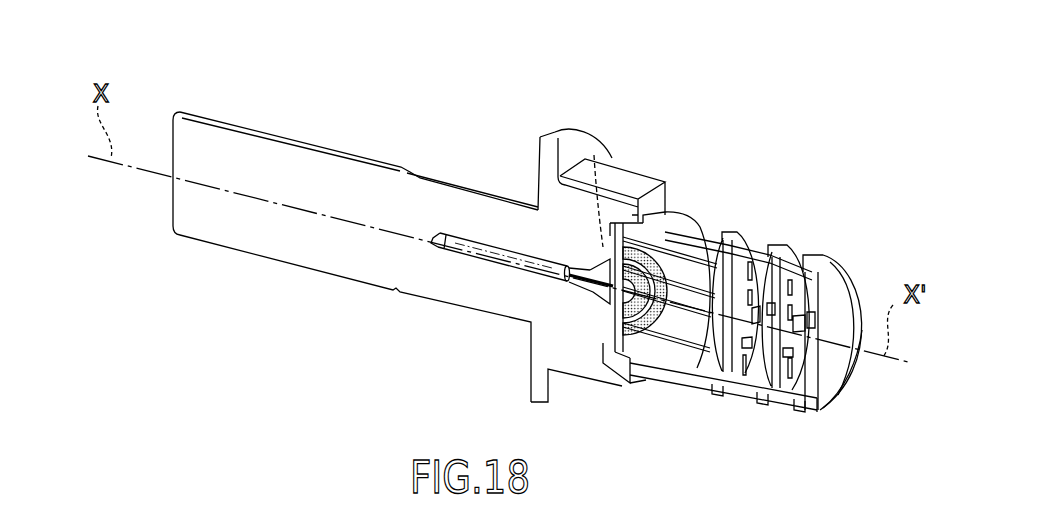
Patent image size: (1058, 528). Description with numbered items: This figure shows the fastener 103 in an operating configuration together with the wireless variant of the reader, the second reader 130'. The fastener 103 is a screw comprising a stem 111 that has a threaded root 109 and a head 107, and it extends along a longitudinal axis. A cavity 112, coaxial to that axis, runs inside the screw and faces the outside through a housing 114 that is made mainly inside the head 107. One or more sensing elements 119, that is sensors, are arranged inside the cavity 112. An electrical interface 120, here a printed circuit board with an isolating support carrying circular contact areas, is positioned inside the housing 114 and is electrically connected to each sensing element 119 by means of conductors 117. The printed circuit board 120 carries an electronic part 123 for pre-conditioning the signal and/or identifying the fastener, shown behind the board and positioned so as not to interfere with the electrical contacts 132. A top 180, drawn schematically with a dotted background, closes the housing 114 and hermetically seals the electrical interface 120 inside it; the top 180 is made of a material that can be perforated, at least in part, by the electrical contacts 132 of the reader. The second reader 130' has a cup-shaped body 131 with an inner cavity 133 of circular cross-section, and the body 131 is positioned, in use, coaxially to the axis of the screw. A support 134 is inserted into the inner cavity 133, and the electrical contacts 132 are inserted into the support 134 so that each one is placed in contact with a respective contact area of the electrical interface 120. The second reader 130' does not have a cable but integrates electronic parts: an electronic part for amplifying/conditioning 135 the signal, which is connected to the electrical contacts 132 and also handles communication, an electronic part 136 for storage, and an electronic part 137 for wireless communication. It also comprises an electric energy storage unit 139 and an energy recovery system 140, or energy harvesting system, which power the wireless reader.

The fastener 103 is at (316, 108).
The threaded root 109 is at (227, 117).
The stem 111 is at (467, 213).
The cavity 112 is at (435, 253).
The sensing elements 119 is at (473, 255).
The conductors 117 is at (600, 292).
The housing 114 is at (609, 360).
The top 180 is at (642, 372).
The electrical interface 120 is at (672, 372).
The electrical contacts 132 is at (677, 293).
The electronic part 123 is at (602, 247).
The head 107 is at (620, 180).
The support 134 is at (650, 262).
The second reader 130' is at (748, 201).
The electronic part for amplifying/conditioning 135 is at (727, 232).
The energy recovery system 140 is at (757, 306).
The electronic part for storage 136 is at (780, 245).
The body 131 is at (837, 288).
The electric energy storage unit 139 is at (845, 303).
The electronic part for wireless communication 137 is at (790, 350).
The inner cavity 133 is at (799, 389).